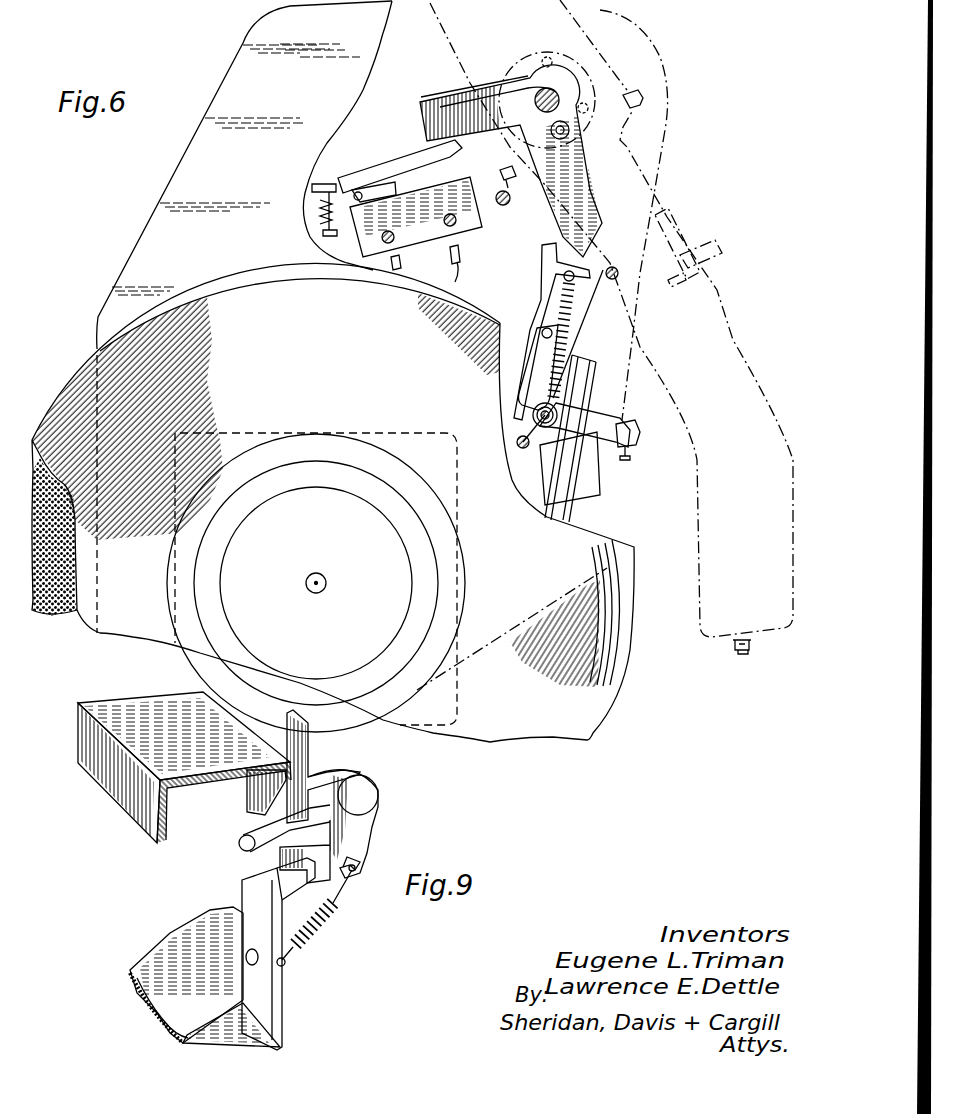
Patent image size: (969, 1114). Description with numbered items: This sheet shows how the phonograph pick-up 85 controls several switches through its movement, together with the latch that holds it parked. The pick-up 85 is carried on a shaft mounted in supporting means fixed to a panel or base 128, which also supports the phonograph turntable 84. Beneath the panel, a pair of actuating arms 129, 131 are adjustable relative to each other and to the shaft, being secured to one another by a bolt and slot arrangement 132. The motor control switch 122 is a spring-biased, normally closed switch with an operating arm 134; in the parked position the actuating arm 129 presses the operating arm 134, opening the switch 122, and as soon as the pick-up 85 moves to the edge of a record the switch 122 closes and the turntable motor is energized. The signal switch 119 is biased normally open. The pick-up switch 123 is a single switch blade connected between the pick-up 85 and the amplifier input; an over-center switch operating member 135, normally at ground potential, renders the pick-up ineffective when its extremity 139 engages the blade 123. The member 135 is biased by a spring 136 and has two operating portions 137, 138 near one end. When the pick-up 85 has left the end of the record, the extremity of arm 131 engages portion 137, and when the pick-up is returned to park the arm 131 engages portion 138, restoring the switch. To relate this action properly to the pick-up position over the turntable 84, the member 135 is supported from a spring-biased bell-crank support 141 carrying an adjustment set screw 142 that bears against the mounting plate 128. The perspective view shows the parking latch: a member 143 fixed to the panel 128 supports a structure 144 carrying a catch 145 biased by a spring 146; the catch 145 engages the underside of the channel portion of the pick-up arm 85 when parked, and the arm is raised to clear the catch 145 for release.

In FIG. 6, the phonograph turntable 84 is at (38, 636).
In FIG. 6, the phonograph pick-up 85 is at (706, 330).
In FIG. 9, the phonograph pick-up 85 is at (123, 790).
In FIG. 6, the signal switch 119 is at (592, 390).
In FIG. 6, the motor control switch 122 is at (415, 200).
In FIG. 6, the phonograph pick-up switch 123 is at (573, 353).
In FIG. 6, the panel or base 128 is at (650, 150).
In FIG. 9, the panel or base 128 is at (177, 1000).
In FIG. 6, the actuating arm 129 is at (437, 99).
In FIG. 6, the actuating arm 131 is at (557, 215).
In FIG. 6, the bolt and slot arrangement 132 is at (565, 130).
In FIG. 6, the operating arm 134 is at (397, 157).
In FIG. 6, the over-center switch operating member 135 is at (563, 277).
In FIG. 6, the spring 136 is at (550, 305).
In FIG. 6, the operating portion 137 is at (542, 252).
In FIG. 6, the operating portion 138 is at (615, 283).
In FIG. 6, the extremity of the actuating member 139 is at (520, 383).
In FIG. 6, the bell-crank support 141 is at (613, 418).
In FIG. 6, the adjustment set screw 142 is at (627, 444).
In FIG. 9, the member 143 is at (272, 1000).
In FIG. 9, the structure 144 is at (280, 983).
In FIG. 9, the catch 145 is at (360, 830).
In FIG. 9, the spring 146 is at (332, 923).